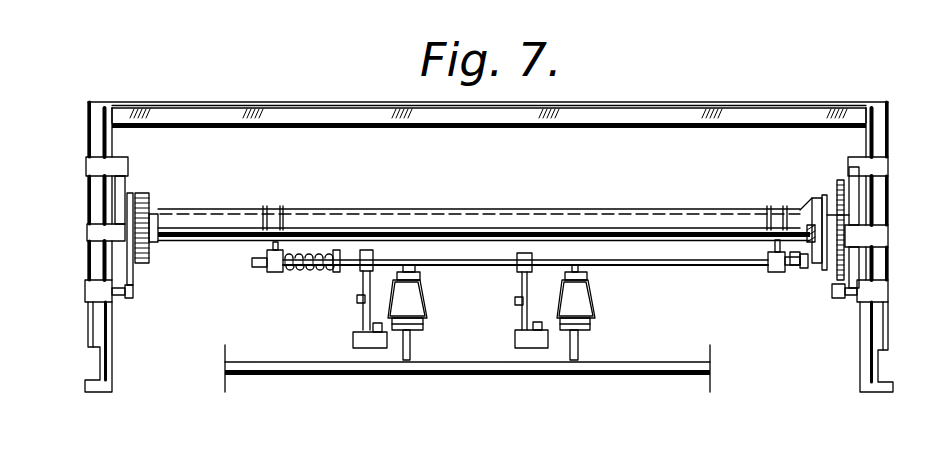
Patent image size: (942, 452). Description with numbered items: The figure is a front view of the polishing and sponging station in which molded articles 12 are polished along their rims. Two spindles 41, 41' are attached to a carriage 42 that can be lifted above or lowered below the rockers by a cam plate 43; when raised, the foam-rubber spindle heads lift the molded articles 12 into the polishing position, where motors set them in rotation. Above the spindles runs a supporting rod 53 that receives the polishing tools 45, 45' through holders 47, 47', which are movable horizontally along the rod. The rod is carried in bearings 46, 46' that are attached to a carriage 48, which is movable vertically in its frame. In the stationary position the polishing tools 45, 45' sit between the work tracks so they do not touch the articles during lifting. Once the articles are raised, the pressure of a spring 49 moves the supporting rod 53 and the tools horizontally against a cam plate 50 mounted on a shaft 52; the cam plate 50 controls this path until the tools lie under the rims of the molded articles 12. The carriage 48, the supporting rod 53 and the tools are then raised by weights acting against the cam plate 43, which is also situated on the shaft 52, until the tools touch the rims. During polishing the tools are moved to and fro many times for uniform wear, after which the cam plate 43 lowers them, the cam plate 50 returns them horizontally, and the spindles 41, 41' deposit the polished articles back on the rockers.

The molded articles 12 is at (410, 297).
The spindle 41 is at (598, 345).
The spindle 41' is at (435, 346).
The carriage 42 is at (496, 366).
The cam plate 43 is at (130, 273).
The polishing tool 45 is at (352, 343).
The polishing tool 45' is at (547, 363).
The bearing 46 is at (247, 276).
The bearing 46' is at (767, 277).
The holder 47 is at (334, 296).
The holder 47' is at (504, 292).
The carriage 48 is at (107, 292).
The spring 49 is at (300, 273).
The cam plate 50 is at (813, 262).
The shaft 52 is at (674, 233).
The supporting rod 53 is at (692, 264).